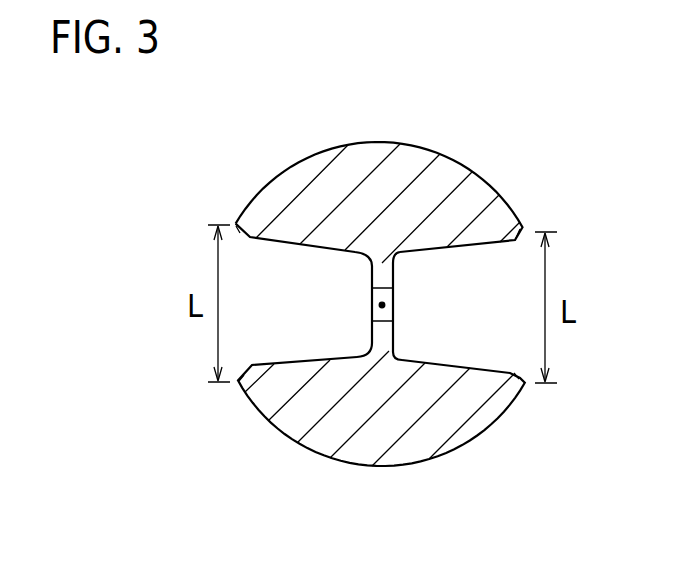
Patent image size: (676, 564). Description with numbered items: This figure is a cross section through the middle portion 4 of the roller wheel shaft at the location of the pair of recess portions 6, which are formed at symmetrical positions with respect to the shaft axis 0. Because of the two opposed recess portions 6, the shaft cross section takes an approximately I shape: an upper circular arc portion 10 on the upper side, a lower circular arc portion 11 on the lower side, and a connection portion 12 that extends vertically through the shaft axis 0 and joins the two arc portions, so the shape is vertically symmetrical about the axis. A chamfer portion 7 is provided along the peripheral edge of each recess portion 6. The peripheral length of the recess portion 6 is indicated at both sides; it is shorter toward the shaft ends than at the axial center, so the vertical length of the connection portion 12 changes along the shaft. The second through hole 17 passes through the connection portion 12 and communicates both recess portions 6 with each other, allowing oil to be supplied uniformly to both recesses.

The middle portion 4 is at (333, 133).
The upper circular arc portion 10 is at (412, 157).
The lower circular arc portion 11 is at (362, 456).
The recess portion 6 is at (273, 363).
The chamfer portion 7 is at (527, 382).
The second through hole 17 is at (372, 298).
The shaft axis 0 is at (385, 305).
The connection portion 12 is at (395, 330).